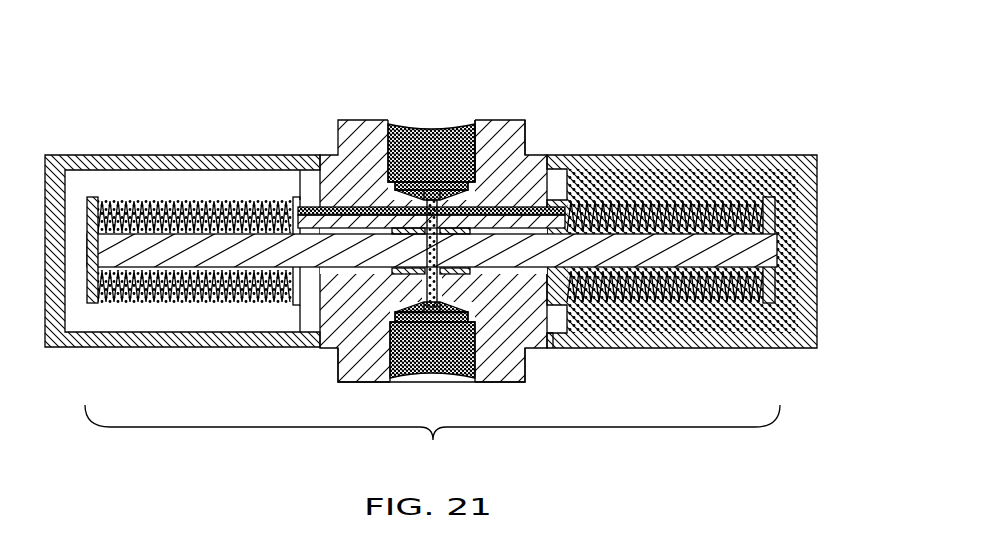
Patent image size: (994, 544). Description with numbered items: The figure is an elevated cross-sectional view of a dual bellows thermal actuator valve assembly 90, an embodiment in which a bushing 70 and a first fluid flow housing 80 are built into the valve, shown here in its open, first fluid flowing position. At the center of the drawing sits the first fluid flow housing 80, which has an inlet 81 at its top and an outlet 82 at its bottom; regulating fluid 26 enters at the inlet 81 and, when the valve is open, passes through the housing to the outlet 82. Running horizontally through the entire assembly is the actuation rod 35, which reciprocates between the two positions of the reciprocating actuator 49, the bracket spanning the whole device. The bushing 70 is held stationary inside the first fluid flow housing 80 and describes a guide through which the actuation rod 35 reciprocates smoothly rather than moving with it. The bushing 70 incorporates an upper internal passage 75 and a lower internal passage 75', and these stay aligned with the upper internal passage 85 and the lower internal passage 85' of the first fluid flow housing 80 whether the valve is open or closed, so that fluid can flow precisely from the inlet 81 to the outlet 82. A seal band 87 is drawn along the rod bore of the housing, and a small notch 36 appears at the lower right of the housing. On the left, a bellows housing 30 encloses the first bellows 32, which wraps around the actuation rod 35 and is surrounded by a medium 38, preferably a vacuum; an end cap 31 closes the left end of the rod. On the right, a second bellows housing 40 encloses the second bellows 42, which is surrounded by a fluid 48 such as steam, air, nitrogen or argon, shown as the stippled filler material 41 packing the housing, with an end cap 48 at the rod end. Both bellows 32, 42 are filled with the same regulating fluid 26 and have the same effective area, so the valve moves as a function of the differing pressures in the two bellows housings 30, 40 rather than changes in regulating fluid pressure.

The regulating fluid 26 is at (418, 148).
The bellows housing 30 is at (150, 161).
The end cap 31 is at (93, 199).
The first bellows 32 is at (215, 275).
The actuation rod 35 is at (341, 253).
The notch 36 is at (551, 334).
The medium 38 is at (128, 190).
The bellows housing 40 is at (648, 165).
The filler material 41 is at (786, 296).
The second bellows 42 is at (690, 215).
The fluid 48 is at (778, 192).
The reciprocating actuator 49 is at (432, 439).
The bushing 70 is at (436, 257).
The upper internal passage 75 is at (433, 214).
The lower internal passage 75' is at (420, 350).
The first fluid flow housing 80 is at (508, 133).
The inlet 81 is at (470, 152).
The outlet 82 is at (463, 368).
The upper internal passage 85 is at (407, 137).
The lower internal passage 85' is at (411, 357).
The seal band 87 is at (331, 207).
The valve assembly 90 is at (763, 94).